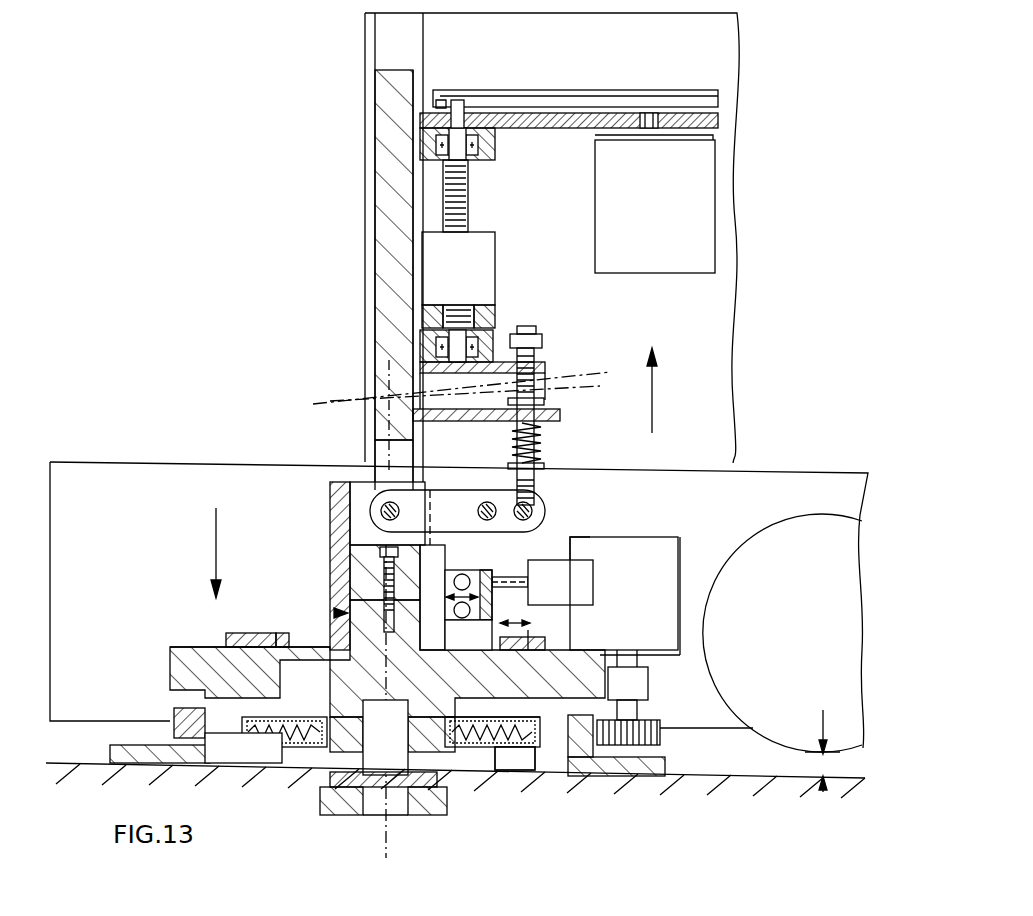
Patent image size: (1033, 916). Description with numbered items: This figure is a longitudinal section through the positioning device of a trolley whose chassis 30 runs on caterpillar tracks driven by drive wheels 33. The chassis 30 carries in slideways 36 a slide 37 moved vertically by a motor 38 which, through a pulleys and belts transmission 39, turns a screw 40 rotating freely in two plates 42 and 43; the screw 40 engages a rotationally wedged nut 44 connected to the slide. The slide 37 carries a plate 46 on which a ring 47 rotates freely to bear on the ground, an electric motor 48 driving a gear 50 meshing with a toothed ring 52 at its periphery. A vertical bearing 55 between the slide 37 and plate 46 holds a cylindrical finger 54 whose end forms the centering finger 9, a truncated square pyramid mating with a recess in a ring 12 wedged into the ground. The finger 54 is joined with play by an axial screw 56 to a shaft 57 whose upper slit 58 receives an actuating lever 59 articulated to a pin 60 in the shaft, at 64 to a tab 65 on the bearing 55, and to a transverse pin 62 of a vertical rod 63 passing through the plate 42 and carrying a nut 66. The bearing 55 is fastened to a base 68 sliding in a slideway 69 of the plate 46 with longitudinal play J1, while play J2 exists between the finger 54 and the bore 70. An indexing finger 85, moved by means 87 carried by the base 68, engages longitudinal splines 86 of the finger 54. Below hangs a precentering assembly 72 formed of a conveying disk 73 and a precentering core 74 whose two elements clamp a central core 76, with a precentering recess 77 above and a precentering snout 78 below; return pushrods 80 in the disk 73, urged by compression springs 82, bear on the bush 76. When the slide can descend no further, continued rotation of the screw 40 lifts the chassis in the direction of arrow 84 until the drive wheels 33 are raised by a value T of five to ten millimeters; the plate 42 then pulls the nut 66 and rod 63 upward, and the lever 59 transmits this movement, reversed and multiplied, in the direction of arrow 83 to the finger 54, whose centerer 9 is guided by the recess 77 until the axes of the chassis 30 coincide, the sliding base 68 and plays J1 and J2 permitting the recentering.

The chassis 30 is at (727, 42).
The slideways 36 is at (426, 34).
The slide 37 is at (403, 82).
The pulleys and belts transmission 39 is at (548, 90).
The plate 43 is at (700, 118).
The motor 38 is at (700, 162).
The screw 40 is at (466, 180).
The nut 44 is at (478, 250).
The slit 58 is at (370, 475).
The nut 66 is at (540, 343).
The plate 42 is at (540, 376).
The vertical rod 63 is at (548, 400).
The articulation 64 is at (540, 440).
The arrow 84 is at (656, 392).
The arrow 83 is at (215, 536).
The vertical bearing 55 is at (332, 476).
The pin 60 is at (362, 512).
The tab 65 is at (458, 490).
The transverse pin 62 is at (532, 506).
The actuating lever 59 is at (430, 488).
The shaft 57 is at (356, 560).
The axial screw 56 is at (380, 582).
The precentering recess 77 is at (372, 703).
The indexing finger 85 is at (470, 578).
The play J2 is at (458, 593).
The base 68 is at (560, 582).
The displacement means 87 is at (578, 560).
The electric motor 48 is at (680, 548).
The longitudinal play J1 is at (532, 623).
The bore 70 is at (468, 634).
The precentering assembly 72 is at (208, 656).
The plate 46 is at (205, 662).
The slideway 69 is at (268, 636).
The cylindrical finger 54 is at (283, 632).
The longitudinal splines 86 is at (334, 613).
The toothed ring 52 is at (178, 715).
The ring 47 is at (115, 752).
The compression springs 82 is at (386, 743).
The centering finger 9 is at (392, 737).
The precentering snout 78 is at (375, 790).
The central core 76 is at (420, 800).
The return pushrods 80 is at (462, 750).
The precentering core 74 is at (520, 766).
The conveying disk 73 is at (578, 778).
The gear 50 is at (662, 735).
The ring 12 is at (280, 770).
The drive wheels 33 is at (816, 522).
The raising value T is at (822, 714).